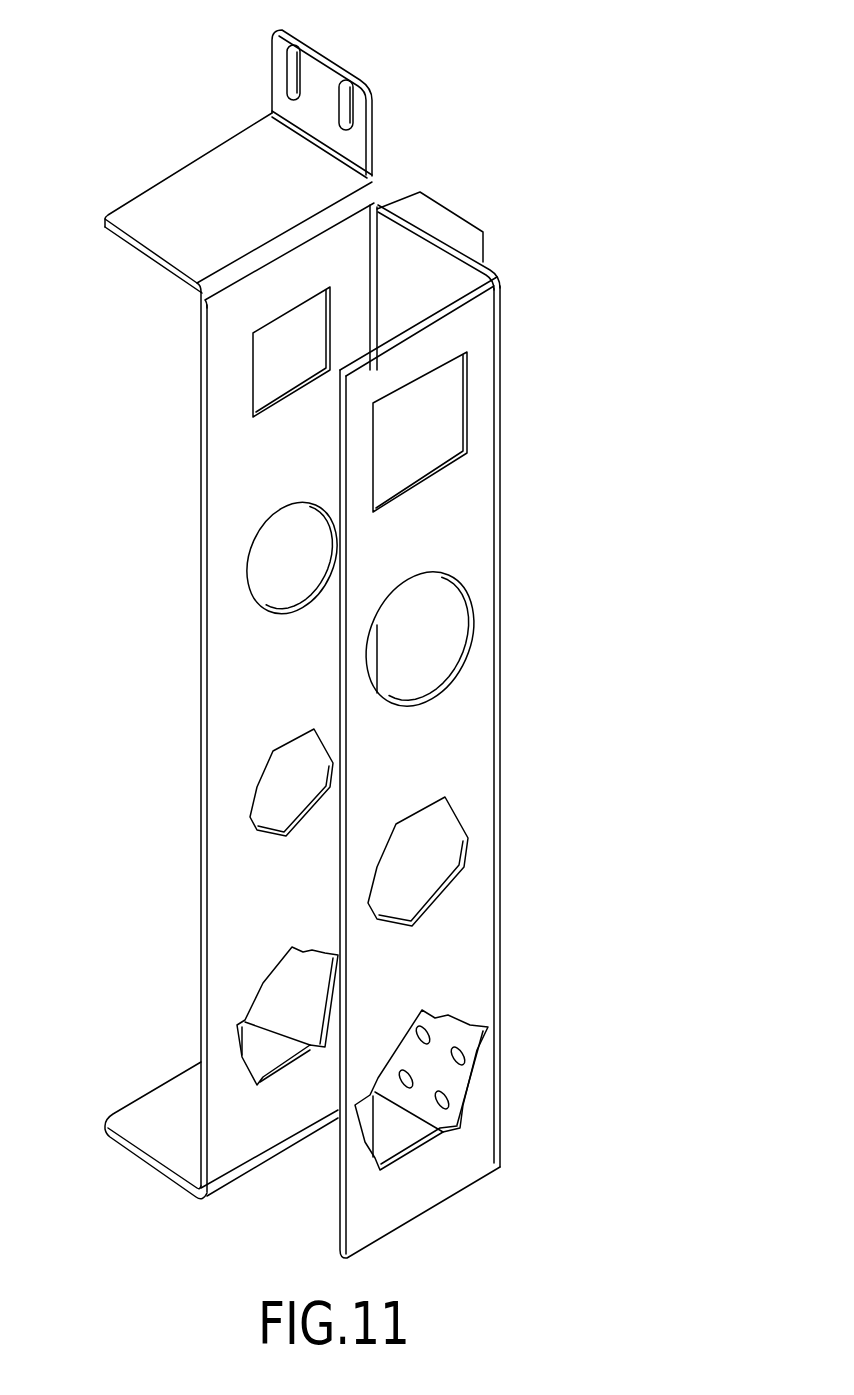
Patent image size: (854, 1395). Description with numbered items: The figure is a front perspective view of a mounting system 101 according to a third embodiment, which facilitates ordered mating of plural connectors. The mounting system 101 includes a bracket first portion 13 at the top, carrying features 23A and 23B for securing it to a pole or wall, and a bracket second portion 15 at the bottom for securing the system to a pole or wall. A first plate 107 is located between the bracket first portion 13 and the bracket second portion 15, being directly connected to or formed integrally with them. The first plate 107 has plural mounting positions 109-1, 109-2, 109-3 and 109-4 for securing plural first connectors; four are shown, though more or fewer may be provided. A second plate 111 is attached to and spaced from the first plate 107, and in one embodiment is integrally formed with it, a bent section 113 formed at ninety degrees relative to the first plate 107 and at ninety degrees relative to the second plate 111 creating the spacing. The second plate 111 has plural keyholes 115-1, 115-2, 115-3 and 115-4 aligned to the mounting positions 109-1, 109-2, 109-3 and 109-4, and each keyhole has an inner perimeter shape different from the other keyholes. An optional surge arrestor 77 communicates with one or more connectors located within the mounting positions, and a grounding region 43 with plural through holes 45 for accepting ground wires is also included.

The mounting system 101 is at (595, 286).
The bracket first portion 13 is at (207, 183).
The feature for securing the bracket first portion 23A is at (353, 112).
The feature for securing the bracket first portion 23B is at (296, 78).
The surge arrestor 77 is at (443, 220).
The bent section 113 is at (463, 283).
The first plate 107 is at (248, 463).
The second plate 111 is at (472, 513).
The mounting position 109-1 is at (253, 377).
The mounting position 109-2 is at (248, 587).
The mounting position 109-3 is at (255, 796).
The mounting position 109-4 is at (263, 980).
The keyhole 115-1 is at (467, 395).
The keyhole 115-2 is at (468, 627).
The keyhole 115-3 is at (468, 820).
The keyhole 115-4 is at (450, 1010).
The grounding region 43 is at (417, 1107).
The through holes 45 is at (458, 1058).
The bracket second portion 15 is at (168, 1145).